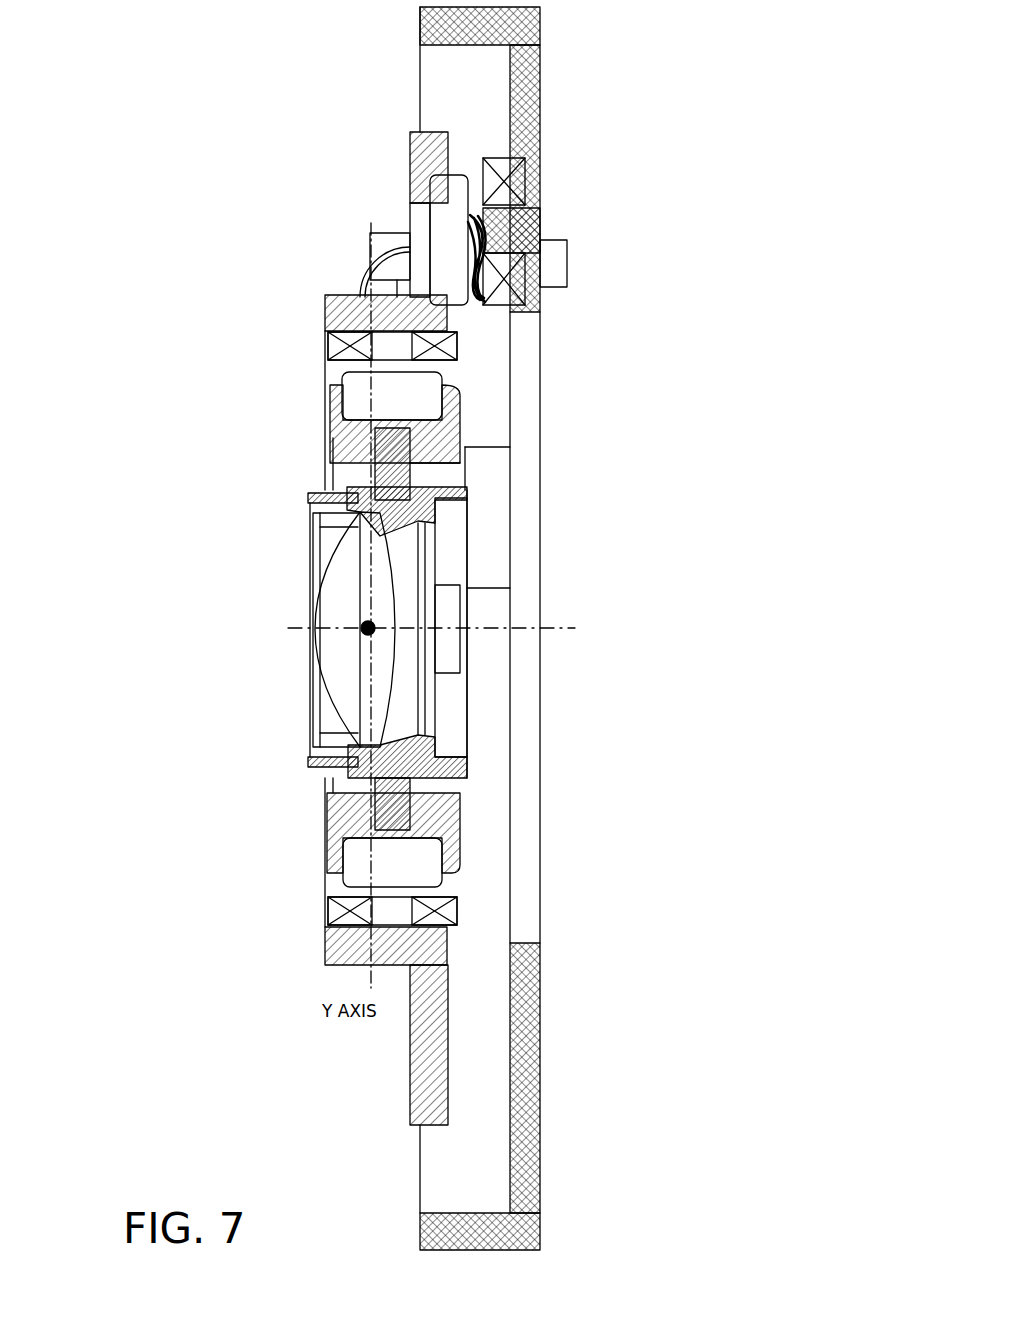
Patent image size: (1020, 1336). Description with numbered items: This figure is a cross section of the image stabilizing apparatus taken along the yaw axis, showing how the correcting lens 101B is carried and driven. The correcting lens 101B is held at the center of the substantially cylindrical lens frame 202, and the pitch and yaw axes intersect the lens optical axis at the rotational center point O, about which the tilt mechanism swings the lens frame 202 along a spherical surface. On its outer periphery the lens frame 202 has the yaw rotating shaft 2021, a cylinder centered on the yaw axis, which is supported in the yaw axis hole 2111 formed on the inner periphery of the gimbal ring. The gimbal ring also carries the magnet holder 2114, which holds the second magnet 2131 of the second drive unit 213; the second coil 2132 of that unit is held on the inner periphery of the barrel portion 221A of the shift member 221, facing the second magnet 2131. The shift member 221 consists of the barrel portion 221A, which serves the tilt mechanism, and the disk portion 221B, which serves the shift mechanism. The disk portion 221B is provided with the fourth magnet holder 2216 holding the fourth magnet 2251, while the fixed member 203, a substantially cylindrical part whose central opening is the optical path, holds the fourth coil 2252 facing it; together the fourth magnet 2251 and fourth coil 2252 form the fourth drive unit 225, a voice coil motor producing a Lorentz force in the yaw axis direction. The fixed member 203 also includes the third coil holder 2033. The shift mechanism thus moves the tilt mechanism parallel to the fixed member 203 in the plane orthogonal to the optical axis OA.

The fixed member 203 is at (525, 1025).
The third coil holder 2033 is at (507, 242).
The fourth magnet holder 2216 is at (420, 182).
The fourth drive unit 225 is at (555, 225).
The fourth coil 2252 is at (503, 175).
The fourth magnet 2251 is at (487, 220).
The shift member 221 is at (327, 300).
The second drive unit 213 is at (300, 628).
The second coil 2132 is at (330, 345).
The second magnet 2131 is at (352, 406).
The magnet holder 2114 is at (345, 432).
The yaw rotating shaft 2021 is at (380, 445).
The lens frame 202 is at (318, 505).
The correcting lens 101B is at (340, 668).
The rotational center point O is at (366, 628).
The optical axis OA is at (552, 628).
The yaw axis hole 2111 is at (348, 800).
The barrel portion 221A is at (338, 945).
The disk portion 221B is at (425, 1040).